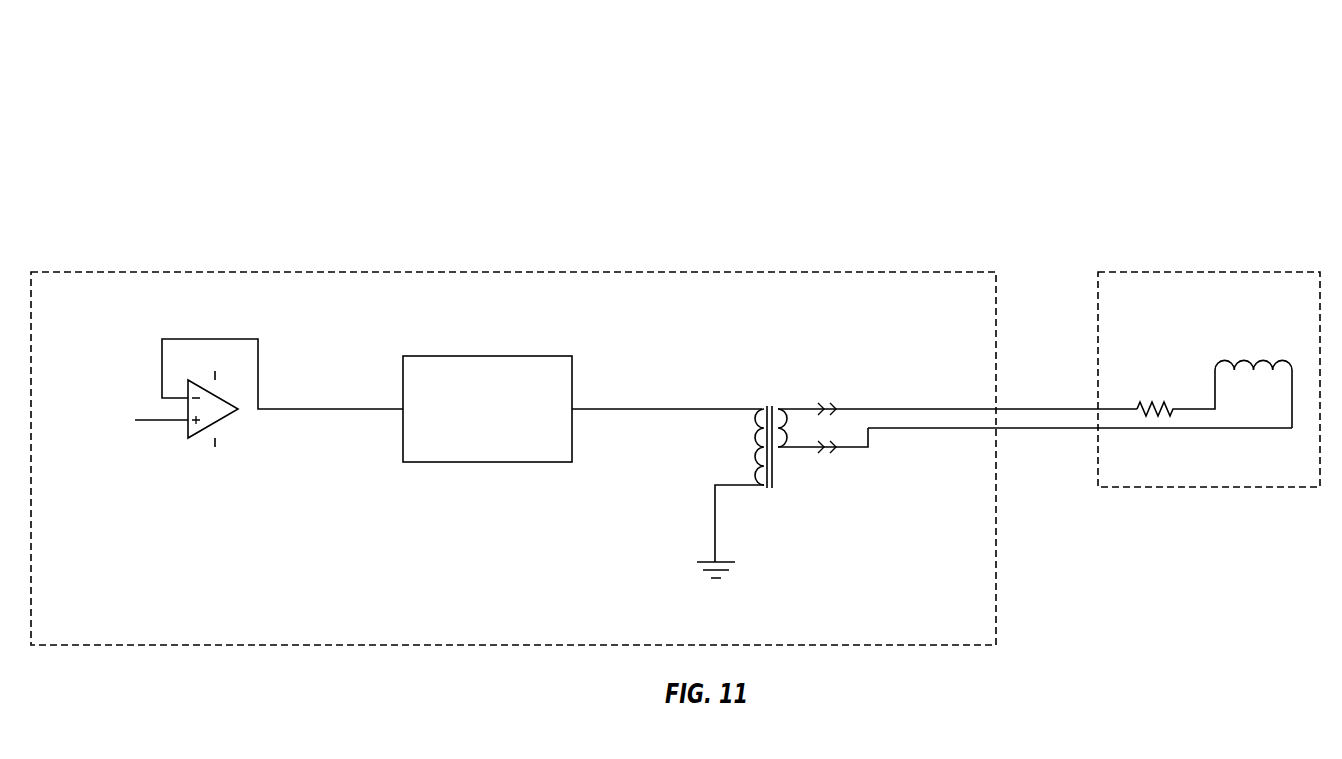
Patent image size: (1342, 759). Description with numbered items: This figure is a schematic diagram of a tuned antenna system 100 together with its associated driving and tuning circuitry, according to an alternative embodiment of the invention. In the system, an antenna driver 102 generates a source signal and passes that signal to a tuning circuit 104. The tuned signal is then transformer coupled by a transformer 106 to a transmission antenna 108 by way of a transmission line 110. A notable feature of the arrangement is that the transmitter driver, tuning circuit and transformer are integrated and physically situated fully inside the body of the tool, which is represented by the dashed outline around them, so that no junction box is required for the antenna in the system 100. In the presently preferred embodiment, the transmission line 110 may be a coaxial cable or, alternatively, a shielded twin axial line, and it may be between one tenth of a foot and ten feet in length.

The tuned antenna system 100 is at (116, 60).
The antenna driver 102 is at (186, 432).
The tuning circuit 104 is at (468, 356).
The transformer 106 is at (774, 465).
The transmission antenna 108 is at (1161, 272).
The transmission line 110 is at (1058, 429).